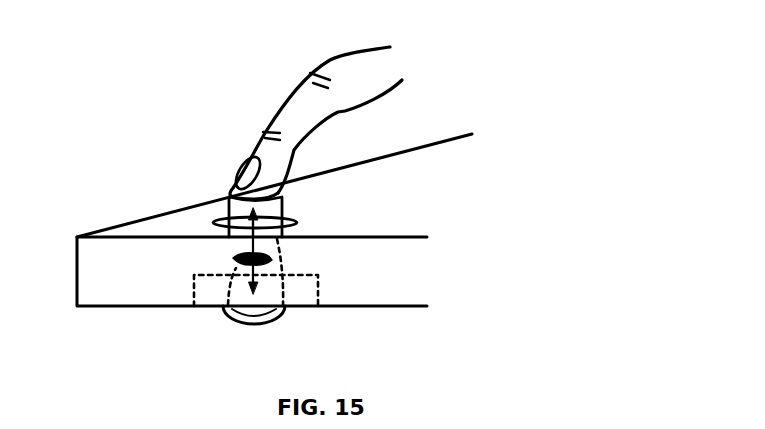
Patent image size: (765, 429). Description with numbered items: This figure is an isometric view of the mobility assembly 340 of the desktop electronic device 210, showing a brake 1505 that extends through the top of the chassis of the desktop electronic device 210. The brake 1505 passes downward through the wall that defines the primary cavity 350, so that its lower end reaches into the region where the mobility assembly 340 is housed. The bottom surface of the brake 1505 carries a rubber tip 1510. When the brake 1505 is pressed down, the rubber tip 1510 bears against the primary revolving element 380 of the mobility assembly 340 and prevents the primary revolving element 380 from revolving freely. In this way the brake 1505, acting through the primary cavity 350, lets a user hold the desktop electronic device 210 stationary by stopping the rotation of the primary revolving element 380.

The desktop electronic device 210 is at (162, 222).
The brake 1505 is at (237, 248).
The rubber tip 1510 is at (268, 260).
The primary cavity 350 is at (228, 305).
The mobility assembly 340 is at (226, 324).
The primary revolving element 380 is at (260, 325).